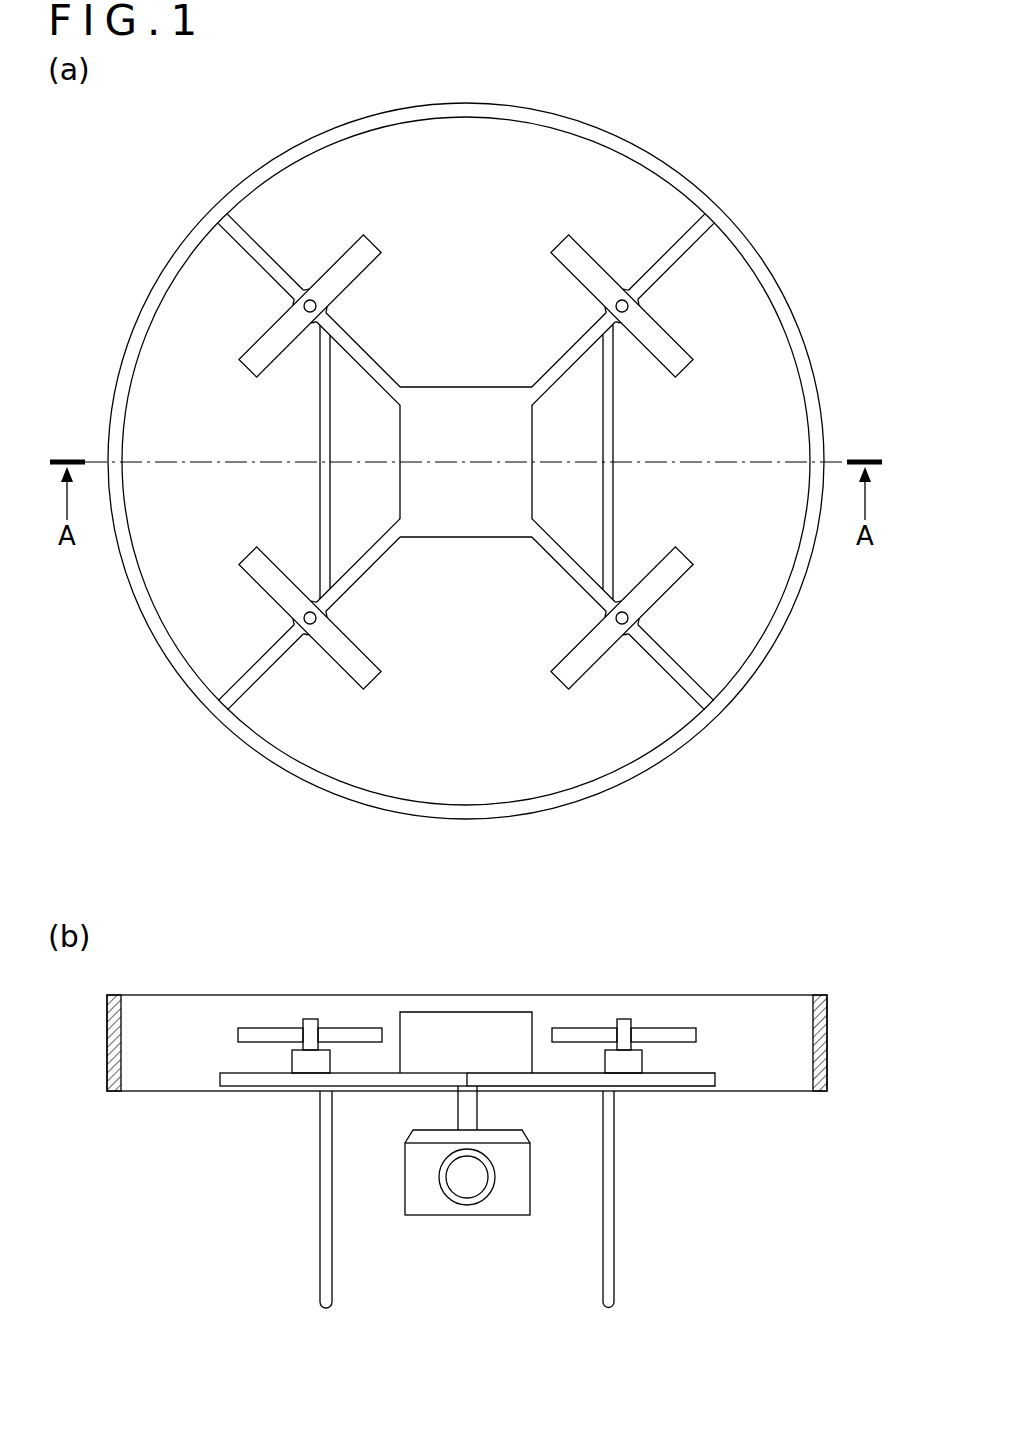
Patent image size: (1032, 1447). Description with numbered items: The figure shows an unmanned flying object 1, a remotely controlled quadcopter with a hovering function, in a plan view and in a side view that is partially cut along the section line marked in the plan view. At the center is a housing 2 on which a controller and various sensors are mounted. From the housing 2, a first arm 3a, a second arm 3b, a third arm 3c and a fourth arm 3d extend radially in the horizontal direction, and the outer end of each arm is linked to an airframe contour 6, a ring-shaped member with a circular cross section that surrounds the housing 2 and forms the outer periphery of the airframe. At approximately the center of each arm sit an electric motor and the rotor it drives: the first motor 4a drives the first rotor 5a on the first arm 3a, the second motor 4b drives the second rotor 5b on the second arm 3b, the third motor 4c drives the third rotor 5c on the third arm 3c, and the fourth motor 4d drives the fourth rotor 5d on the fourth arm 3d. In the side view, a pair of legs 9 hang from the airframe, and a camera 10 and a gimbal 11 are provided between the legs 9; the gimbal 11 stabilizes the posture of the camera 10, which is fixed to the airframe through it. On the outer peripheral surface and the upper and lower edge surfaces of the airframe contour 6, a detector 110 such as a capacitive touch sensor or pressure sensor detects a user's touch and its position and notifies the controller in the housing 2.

The unmanned flying object 1 is at (475, 883).
The housing 2 is at (467, 386).
The first arm 3a is at (366, 347).
The second arm 3b is at (365, 580).
The third arm 3c is at (568, 580).
The fourth arm 3d is at (567, 347).
The first motor 4a is at (295, 305).
The second motor 4b is at (295, 619).
The third motor 4c is at (637, 619).
The fourth motor 4d is at (637, 305).
The first rotor 5a is at (371, 236).
The second rotor 5b is at (372, 688).
The third rotor 5c is at (561, 688).
The fourth rotor 5d is at (562, 236).
The airframe contour 6 is at (507, 567).
The legs 9 is at (318, 406).
The camera 10 is at (507, 1222).
The gimbal 11 is at (478, 1108).
The detector 110 is at (667, 162).